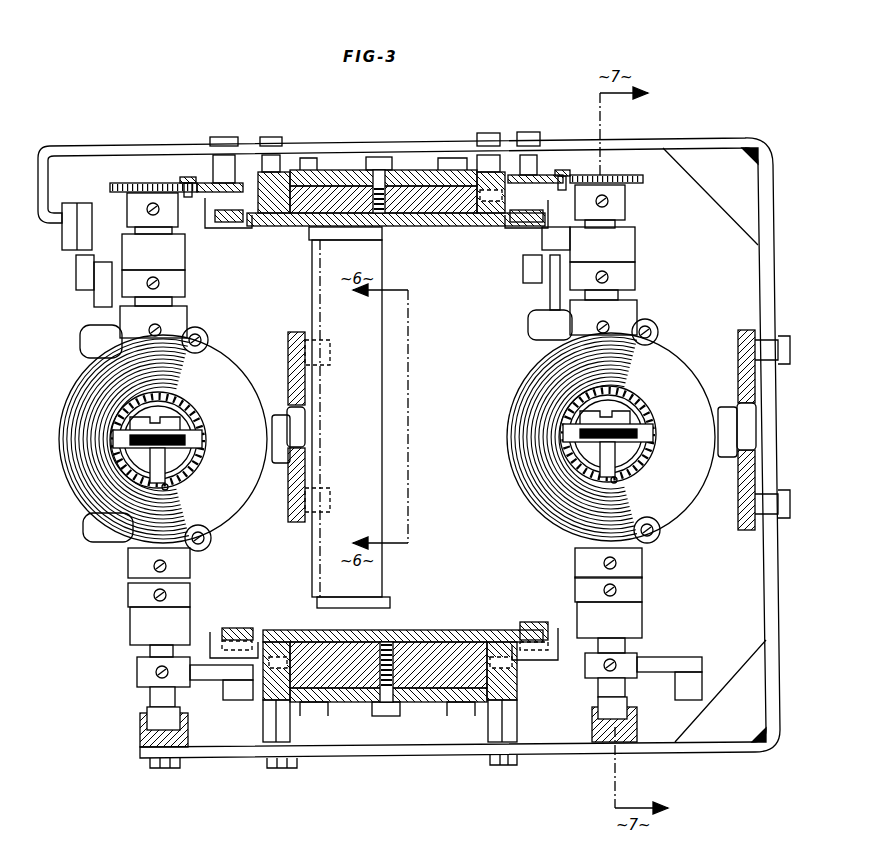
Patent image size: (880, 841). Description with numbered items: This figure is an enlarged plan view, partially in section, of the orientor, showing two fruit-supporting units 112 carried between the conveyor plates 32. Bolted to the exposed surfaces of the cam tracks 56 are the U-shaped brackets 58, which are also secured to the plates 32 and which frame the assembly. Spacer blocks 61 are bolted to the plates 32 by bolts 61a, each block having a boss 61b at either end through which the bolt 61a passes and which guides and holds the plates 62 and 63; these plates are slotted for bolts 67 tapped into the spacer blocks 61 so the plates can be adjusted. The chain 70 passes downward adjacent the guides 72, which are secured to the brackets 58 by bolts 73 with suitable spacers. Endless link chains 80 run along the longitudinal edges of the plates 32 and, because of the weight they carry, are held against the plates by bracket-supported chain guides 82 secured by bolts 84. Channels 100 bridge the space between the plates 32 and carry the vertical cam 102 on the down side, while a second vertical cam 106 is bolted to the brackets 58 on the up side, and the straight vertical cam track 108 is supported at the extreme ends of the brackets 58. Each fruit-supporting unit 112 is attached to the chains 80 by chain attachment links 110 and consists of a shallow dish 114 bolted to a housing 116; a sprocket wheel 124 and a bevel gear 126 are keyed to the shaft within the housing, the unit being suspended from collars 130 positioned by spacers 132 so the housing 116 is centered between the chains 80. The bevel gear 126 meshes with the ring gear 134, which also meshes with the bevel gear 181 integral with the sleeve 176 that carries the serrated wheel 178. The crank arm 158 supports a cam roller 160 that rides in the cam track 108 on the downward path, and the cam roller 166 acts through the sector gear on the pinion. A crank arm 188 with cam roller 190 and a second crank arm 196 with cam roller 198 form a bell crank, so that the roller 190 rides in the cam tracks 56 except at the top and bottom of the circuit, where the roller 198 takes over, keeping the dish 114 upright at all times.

The plates 32 is at (430, 226).
The cam tracks 56 is at (138, 730).
The U-shaped brackets 58 is at (682, 138).
The spacer blocks 61 is at (333, 193).
The bolts 61a is at (271, 168).
The boss 61b is at (257, 183).
The plate 62 is at (427, 698).
The plate 63 is at (413, 178).
The bolts 67 is at (381, 157).
The chain 70 is at (180, 194).
The guides 72 is at (187, 177).
The bolts 73 is at (218, 133).
The endless link chains 80 is at (238, 221).
The chain guides 82 is at (208, 230).
The bolts 84 is at (308, 155).
The channels 100 is at (367, 453).
The vertical cam 102 is at (287, 343).
The second vertical cam 106 is at (738, 333).
The straight vertical cam track 108 is at (62, 293).
The chain attachment links 110 is at (227, 637).
The fruit-supporting units 112 is at (233, 530).
The dish 114 is at (217, 350).
The housing 116 is at (132, 564).
The sprocket wheel 124 is at (150, 182).
The bevel gear 126 is at (163, 390).
The collars 130 is at (177, 258).
The spacers 132 is at (177, 292).
The ring gear 134 is at (197, 460).
The crank arm 158 is at (105, 307).
The cam roller 160 is at (85, 263).
The cam roller 166 is at (303, 427).
The sleeve 176 is at (162, 470).
The serrated wheel 178 is at (173, 435).
The bevel gear 181 is at (165, 490).
The crank arm 188 is at (142, 672).
The cam roller 190 is at (153, 715).
The second crank arm 196 is at (692, 660).
The cam roller 198 is at (227, 697).